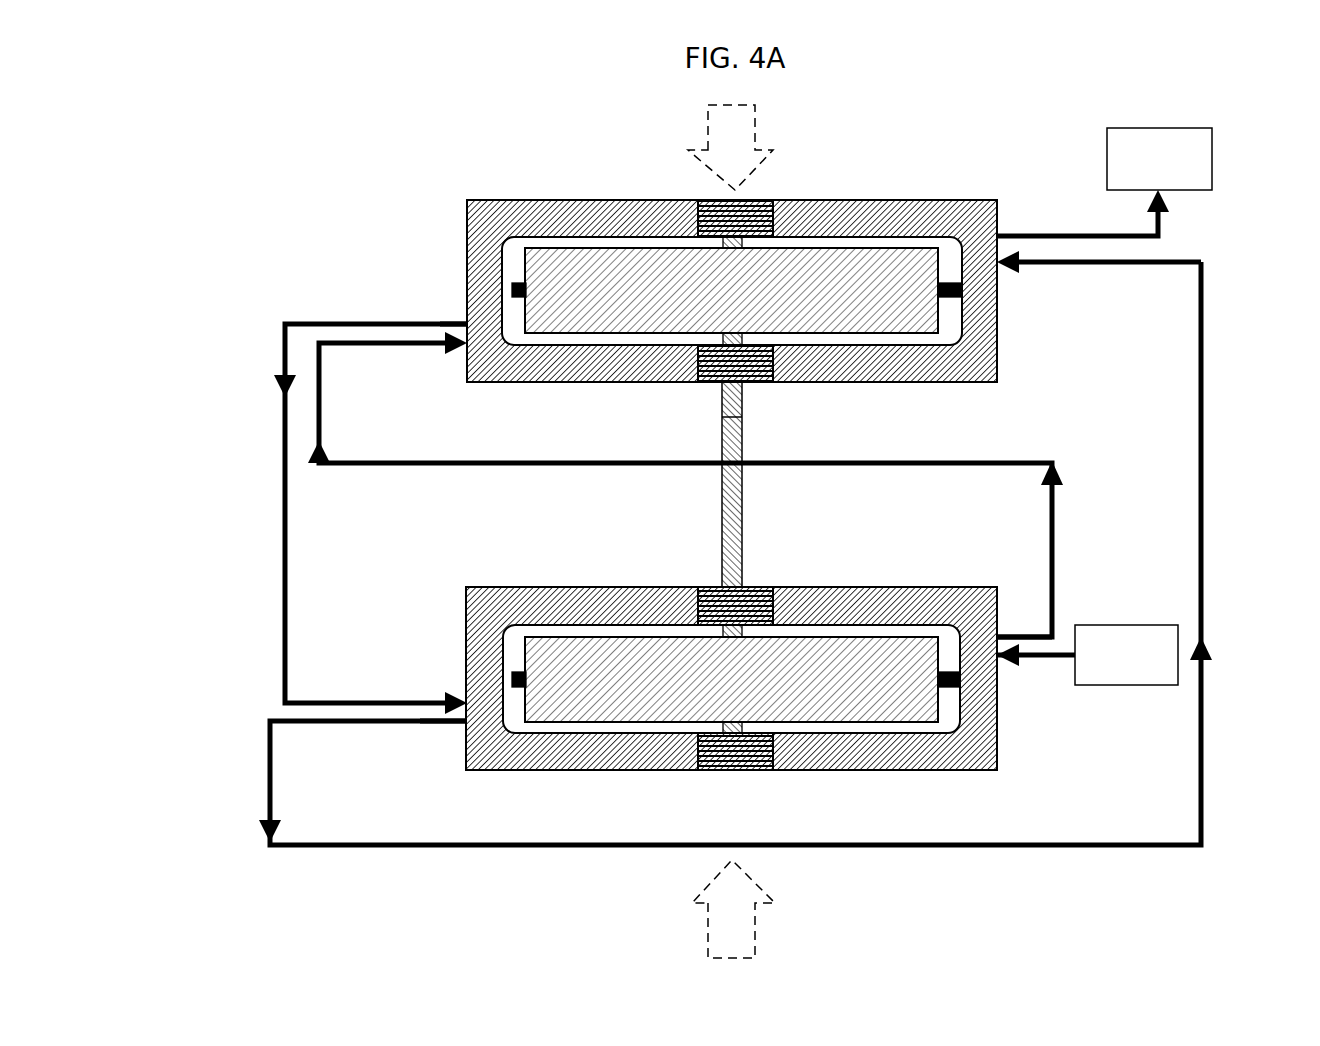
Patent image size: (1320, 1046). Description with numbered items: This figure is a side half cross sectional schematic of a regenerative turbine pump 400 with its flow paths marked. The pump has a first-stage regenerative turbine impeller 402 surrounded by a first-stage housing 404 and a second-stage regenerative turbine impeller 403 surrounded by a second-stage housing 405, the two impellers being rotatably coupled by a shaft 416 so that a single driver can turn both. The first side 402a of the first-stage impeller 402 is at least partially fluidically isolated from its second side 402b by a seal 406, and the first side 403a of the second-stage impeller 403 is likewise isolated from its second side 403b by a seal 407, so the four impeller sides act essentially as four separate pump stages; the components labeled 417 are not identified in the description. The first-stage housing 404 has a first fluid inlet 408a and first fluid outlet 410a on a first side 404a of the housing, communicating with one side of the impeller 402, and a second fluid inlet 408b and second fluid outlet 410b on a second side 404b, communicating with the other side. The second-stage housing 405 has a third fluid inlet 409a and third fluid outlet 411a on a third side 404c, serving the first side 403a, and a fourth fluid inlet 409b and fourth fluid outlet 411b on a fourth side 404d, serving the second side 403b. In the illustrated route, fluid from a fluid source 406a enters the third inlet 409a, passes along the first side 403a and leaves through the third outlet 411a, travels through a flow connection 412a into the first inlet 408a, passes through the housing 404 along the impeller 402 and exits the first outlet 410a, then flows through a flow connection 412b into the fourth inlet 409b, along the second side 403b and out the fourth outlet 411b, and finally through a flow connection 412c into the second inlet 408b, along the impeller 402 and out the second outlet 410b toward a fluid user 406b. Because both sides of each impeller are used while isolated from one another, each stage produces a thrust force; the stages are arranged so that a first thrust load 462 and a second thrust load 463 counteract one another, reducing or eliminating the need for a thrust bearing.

The regenerative turbine pump 400 is at (1105, 403).
The first-stage regenerative turbine impeller 402 is at (703, 309).
The first side of first-stage impeller 402a is at (545, 245).
The second side of first-stage impeller 402b is at (872, 338).
The second-stage regenerative turbine impeller 403 is at (703, 689).
The first side of second-stage impeller 403a is at (578, 637).
The second side of second-stage impeller 403b is at (905, 725).
The first-stage housing 404 is at (583, 200).
The first side of pump housing 404a is at (465, 292).
The second side of pump housing 404b is at (1005, 320).
The third side of pump housing 404c is at (465, 607).
The fourth side of pump housing 404d is at (1000, 747).
The second-stage housing 405 is at (630, 587).
The seal 406 is at (513, 300).
The fluid source 406a is at (1095, 671).
The fluid user 406b is at (1128, 176).
The seal 407 is at (505, 745).
The first fluid inlet 408a is at (467, 345).
The second fluid inlet 408b is at (1000, 270).
The third fluid inlet 409a is at (1002, 662).
The fourth fluid inlet 409b is at (465, 680).
The first fluid outlet 410a is at (463, 315).
The second fluid outlet 410b is at (1005, 235).
The third fluid outlet 411a is at (1000, 628).
The fourth fluid outlet 411b is at (467, 722).
The flow connection 412a is at (449, 468).
The flow connection 412b is at (283, 520).
The flow connection 412c is at (855, 858).
The shaft 416 is at (742, 538).
The seal 417 is at (778, 205).
The first thrust load 462 is at (770, 152).
The second thrust load 463 is at (695, 900).